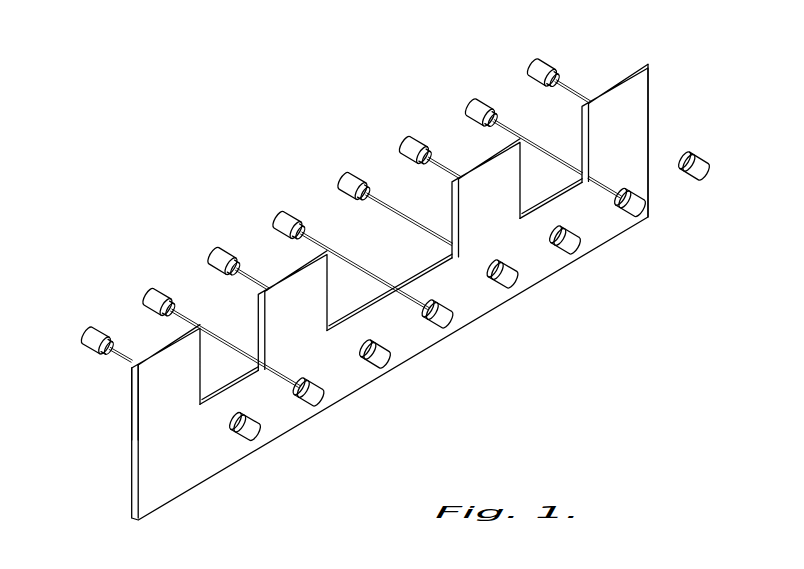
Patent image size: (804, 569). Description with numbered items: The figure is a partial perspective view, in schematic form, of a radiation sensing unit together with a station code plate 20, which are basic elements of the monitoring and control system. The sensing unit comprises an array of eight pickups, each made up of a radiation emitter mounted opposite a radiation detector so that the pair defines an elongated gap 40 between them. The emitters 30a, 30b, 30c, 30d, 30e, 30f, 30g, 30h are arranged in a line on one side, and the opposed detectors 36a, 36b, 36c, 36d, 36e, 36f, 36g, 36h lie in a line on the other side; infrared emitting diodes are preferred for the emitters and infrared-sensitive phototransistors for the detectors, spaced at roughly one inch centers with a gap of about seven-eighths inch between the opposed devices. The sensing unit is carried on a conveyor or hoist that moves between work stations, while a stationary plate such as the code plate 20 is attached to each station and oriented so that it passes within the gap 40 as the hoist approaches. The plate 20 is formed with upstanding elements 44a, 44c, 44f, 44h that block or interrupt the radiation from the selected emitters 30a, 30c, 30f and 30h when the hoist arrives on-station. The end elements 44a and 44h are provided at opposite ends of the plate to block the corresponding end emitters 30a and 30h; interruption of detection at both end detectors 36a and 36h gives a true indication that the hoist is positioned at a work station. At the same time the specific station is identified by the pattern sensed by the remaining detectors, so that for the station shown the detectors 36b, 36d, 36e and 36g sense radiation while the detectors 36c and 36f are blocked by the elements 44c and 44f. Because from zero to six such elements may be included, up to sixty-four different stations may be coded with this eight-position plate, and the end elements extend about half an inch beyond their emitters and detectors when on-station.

The station code plate 20 is at (650, 90).
The elongated gap 40 is at (112, 433).
The element 44a is at (165, 366).
The element 44c is at (292, 290).
The element 44f is at (480, 180).
The element 44h is at (626, 93).
The radiation emitter 30a is at (86, 333).
The radiation emitter 30b is at (148, 294).
The radiation emitter 30c is at (213, 253).
The radiation emitter 30d is at (278, 217).
The radiation emitter 30e is at (343, 178).
The radiation emitter 30f is at (405, 142).
The radiation emitter 30g is at (471, 104).
The radiation emitter 30h is at (534, 64).
The radiation detector 36a is at (257, 438).
The radiation detector 36b is at (320, 403).
The radiation detector 36c is at (387, 366).
The radiation detector 36d is at (450, 326).
The radiation detector 36e is at (515, 286).
The radiation detector 36f is at (577, 252).
The radiation detector 36g is at (642, 214).
The radiation detector 36h is at (706, 178).